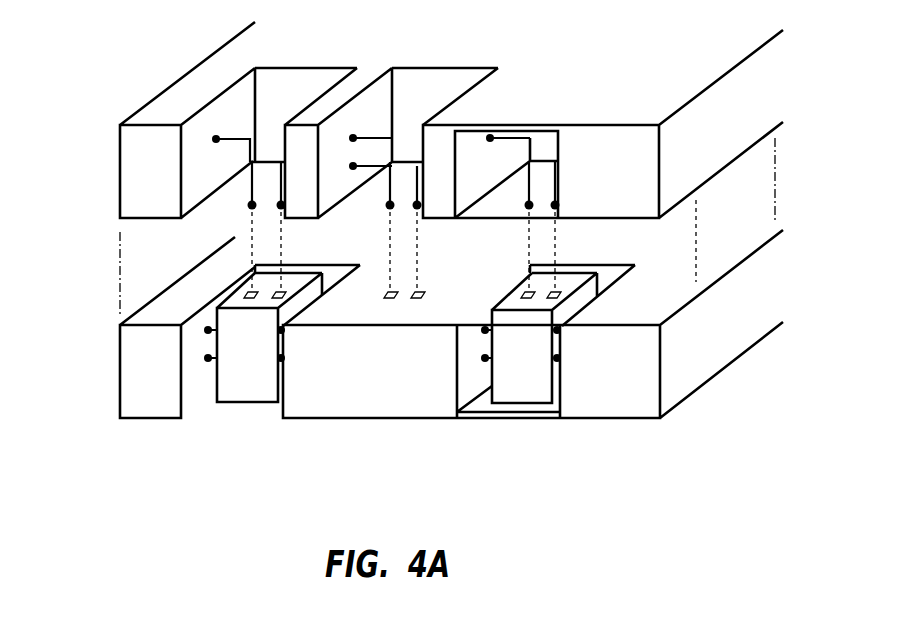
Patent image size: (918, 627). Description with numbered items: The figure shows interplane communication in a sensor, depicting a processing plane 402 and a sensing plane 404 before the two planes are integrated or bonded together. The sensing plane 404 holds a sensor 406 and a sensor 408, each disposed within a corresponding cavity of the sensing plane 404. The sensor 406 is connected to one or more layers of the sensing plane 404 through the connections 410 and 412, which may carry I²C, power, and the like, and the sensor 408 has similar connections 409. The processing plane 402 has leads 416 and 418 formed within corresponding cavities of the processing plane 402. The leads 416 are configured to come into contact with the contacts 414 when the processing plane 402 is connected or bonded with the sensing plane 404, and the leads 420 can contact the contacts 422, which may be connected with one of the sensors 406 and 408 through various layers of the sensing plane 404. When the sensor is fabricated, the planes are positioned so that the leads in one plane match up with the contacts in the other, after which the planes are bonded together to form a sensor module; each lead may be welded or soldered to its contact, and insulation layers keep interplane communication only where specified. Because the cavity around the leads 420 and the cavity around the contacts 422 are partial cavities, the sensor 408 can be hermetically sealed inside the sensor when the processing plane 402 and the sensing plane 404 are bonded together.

The processing plane 402 is at (120, 164).
The sensing plane 404 is at (120, 362).
The sensor 406 is at (242, 405).
The sensor 408 is at (587, 399).
The connections 409 is at (484, 358).
The connection 410 is at (208, 358).
The connection 412 is at (282, 330).
The contacts 414 is at (278, 291).
The leads 416 is at (272, 145).
The leads 418 is at (572, 135).
The leads 420 is at (418, 152).
The contacts 422 is at (417, 288).